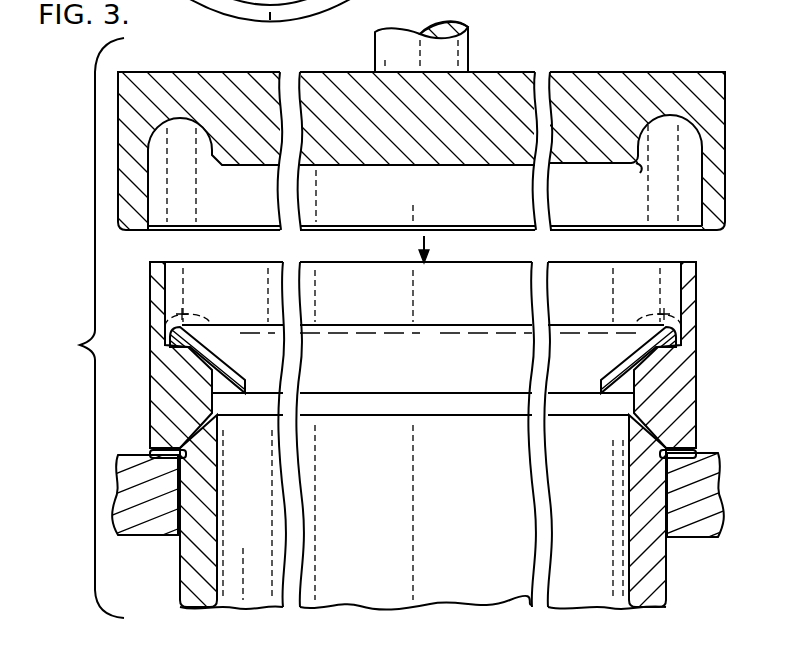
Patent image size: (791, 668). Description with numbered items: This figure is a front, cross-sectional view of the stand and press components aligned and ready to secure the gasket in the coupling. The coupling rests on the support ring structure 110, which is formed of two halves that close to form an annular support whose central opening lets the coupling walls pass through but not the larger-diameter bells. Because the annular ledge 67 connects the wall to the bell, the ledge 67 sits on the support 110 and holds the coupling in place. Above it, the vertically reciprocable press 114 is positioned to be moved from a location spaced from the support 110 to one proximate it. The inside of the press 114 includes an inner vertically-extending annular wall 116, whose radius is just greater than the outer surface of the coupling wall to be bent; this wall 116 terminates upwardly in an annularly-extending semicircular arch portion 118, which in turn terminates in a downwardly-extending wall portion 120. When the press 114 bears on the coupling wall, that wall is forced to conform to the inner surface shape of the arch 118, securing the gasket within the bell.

The press 114 is at (613, 80).
The semicircular arch portion 118 is at (693, 118).
The downwardly-extending wall portion 120 is at (638, 166).
The inner vertically-extending annular wall 116 is at (702, 197).
The annular ledge 67 is at (150, 455).
The support ring structure 110 is at (116, 537).